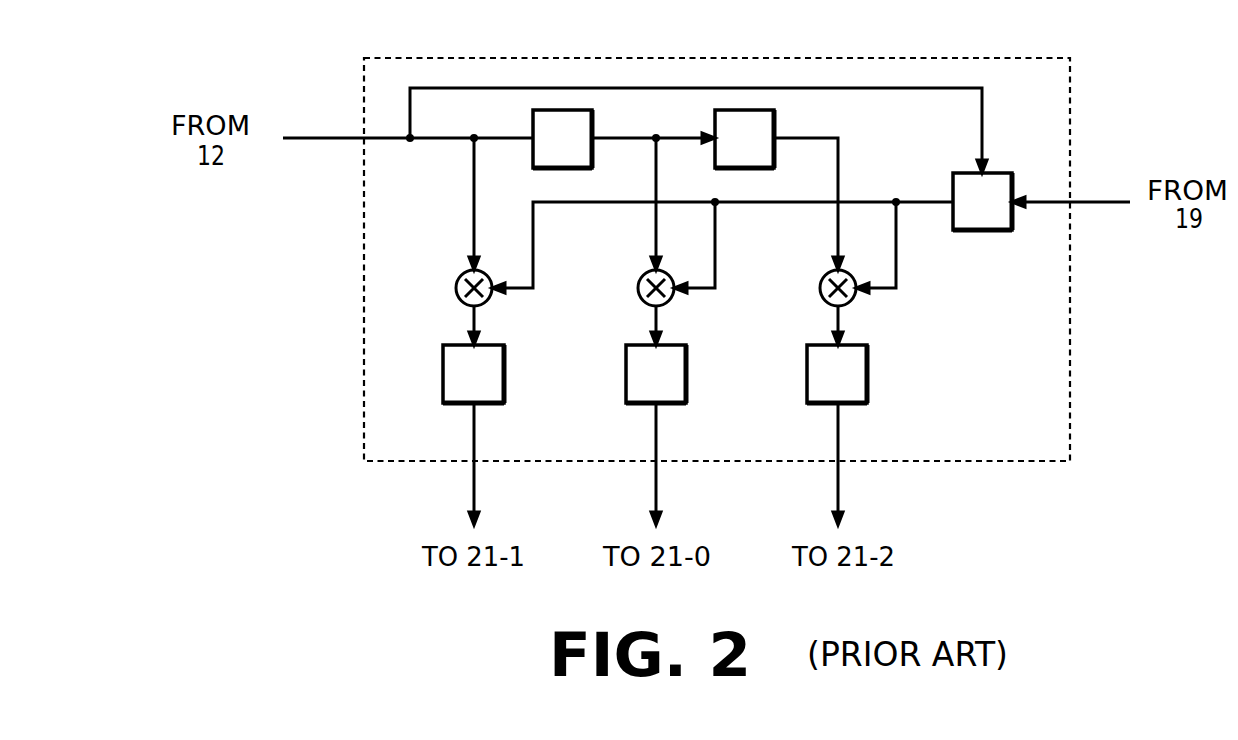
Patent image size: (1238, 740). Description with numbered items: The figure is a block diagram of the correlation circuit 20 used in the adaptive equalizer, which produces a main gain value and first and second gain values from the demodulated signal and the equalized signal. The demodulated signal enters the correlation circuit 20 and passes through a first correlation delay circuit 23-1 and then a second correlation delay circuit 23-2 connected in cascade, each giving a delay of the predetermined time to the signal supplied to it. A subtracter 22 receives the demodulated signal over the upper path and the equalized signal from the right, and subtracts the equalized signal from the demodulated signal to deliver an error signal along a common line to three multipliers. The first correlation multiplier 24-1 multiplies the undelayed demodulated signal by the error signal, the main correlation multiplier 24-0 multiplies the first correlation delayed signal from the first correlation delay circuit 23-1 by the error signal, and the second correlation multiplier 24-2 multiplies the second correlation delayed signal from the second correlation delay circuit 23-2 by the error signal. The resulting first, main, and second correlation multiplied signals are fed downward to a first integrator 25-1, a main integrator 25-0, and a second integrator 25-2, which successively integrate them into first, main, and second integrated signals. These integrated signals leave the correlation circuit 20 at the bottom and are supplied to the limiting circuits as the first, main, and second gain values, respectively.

The correlation circuit 20 is at (803, 58).
The first correlation delay circuit 23-1 is at (533, 114).
The second correlation delay circuit 23-2 is at (774, 116).
The subtracter 22 is at (982, 231).
The first correlation multiplier 24-1 is at (462, 301).
The main correlation multiplier 24-0 is at (644, 299).
The second correlation multiplier 24-2 is at (826, 300).
The first integrator 25-1 is at (504, 375).
The main integrator 25-0 is at (686, 375).
The second integrator 25-2 is at (867, 375).